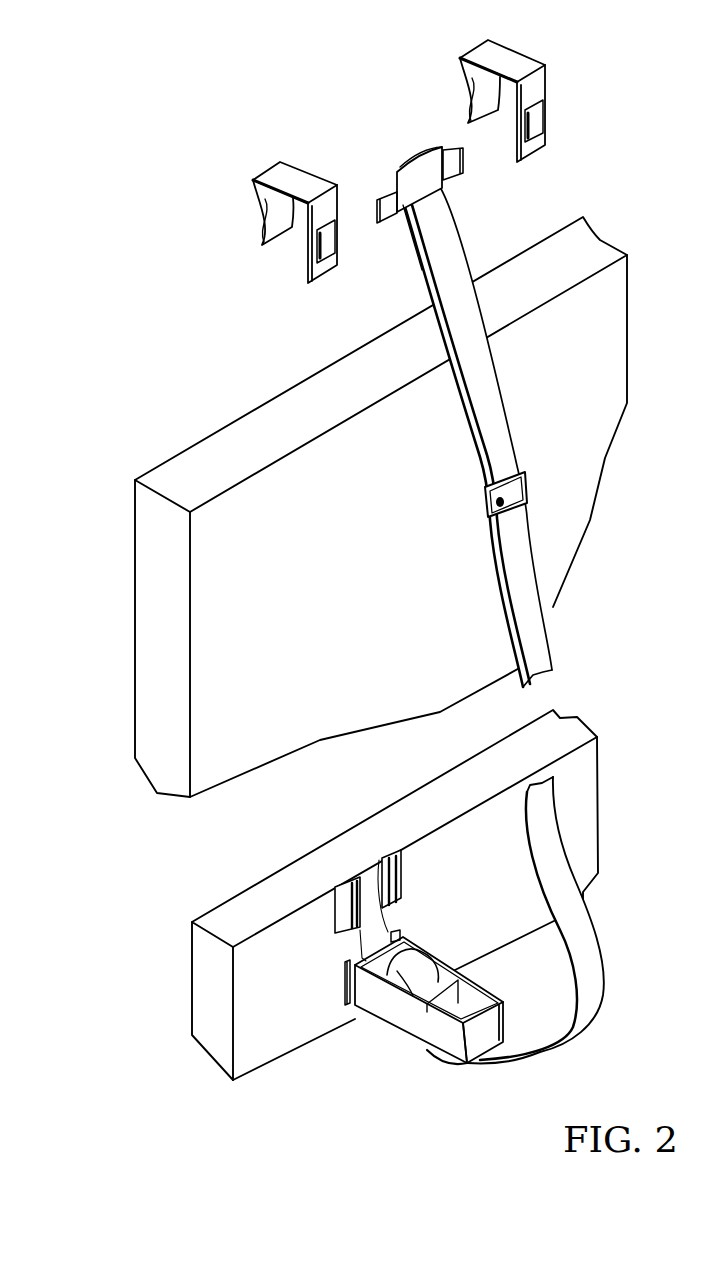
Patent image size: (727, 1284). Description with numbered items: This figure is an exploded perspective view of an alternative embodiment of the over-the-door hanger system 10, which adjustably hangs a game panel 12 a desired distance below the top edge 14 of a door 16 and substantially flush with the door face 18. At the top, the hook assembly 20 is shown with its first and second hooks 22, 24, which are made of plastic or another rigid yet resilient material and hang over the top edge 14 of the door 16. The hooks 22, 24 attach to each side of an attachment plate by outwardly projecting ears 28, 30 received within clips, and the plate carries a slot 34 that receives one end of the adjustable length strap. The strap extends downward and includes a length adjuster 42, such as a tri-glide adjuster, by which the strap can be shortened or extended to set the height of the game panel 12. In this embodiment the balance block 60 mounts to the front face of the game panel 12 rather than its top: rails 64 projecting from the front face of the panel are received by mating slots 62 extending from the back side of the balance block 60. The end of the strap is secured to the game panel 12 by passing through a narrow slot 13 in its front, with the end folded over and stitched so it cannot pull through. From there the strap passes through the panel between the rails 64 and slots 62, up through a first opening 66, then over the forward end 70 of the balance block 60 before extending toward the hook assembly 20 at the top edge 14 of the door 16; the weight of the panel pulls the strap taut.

The over-the-door hanger system 10 is at (150, 152).
The game panel 12 is at (112, 950).
The narrow slot 13 is at (364, 893).
The top edge 14 is at (218, 448).
The door 16 is at (337, 507).
The door face 18 is at (265, 647).
The hook assembly 20 is at (358, 96).
The first hook 22 is at (270, 225).
The second hook 24 is at (510, 87).
The outwardly projecting ear 28 is at (392, 214).
The outwardly projecting ear 30 is at (452, 173).
The slot 34 is at (440, 200).
The length adjuster 42 is at (497, 507).
The balance block 60 is at (393, 989).
The mating slots 62 is at (342, 957).
The rails 64 is at (338, 927).
The first opening 66 is at (368, 975).
The forward end 70 is at (467, 1065).